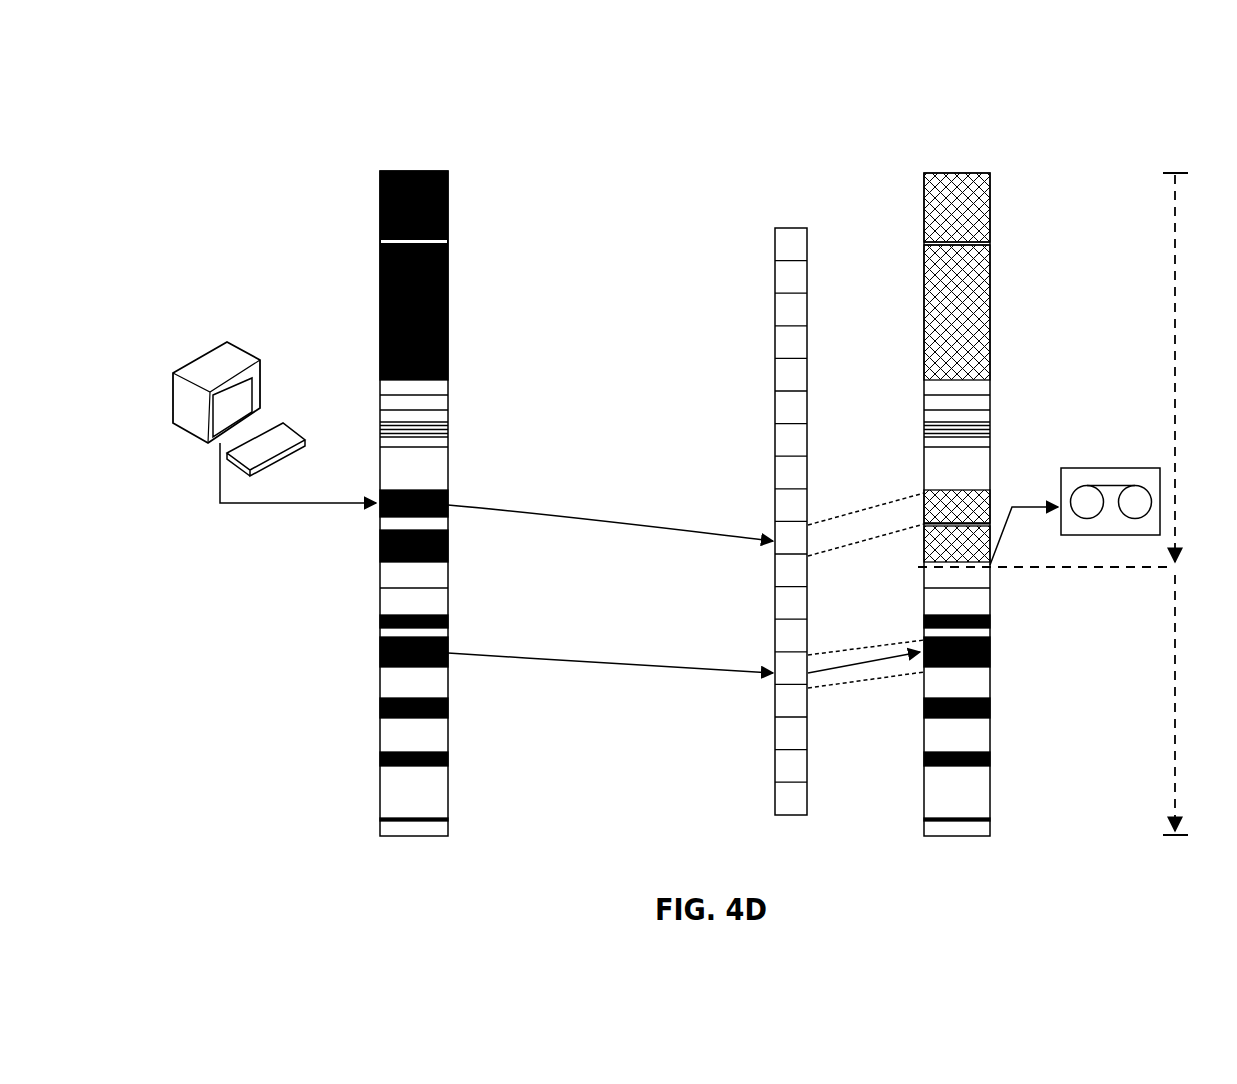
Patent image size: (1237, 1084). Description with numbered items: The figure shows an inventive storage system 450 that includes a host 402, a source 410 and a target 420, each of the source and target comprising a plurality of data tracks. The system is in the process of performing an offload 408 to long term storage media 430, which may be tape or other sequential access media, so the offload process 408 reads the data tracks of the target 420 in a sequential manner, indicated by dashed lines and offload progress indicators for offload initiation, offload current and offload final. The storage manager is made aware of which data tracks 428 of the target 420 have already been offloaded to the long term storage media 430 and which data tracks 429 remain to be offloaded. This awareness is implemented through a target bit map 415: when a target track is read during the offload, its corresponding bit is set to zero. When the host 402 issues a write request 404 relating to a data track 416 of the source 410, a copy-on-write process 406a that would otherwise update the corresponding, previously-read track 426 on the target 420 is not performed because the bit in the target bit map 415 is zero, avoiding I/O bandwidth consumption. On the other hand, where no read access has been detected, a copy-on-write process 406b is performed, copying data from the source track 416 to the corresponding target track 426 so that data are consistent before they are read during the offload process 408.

The storage system 450 is at (258, 188).
The host 402 is at (241, 337).
The write request 404 is at (281, 506).
The source 410 is at (423, 166).
The target bit map 415 is at (796, 213).
The source data track 416 is at (432, 663).
The target 420 is at (961, 166).
The target data track 426 is at (975, 515).
The offloaded data tracks 428 is at (1003, 210).
The remaining data tracks 429 is at (1003, 655).
The long term storage media 430 is at (1111, 462).
The offload process 408 is at (1027, 506).
The copy-on-write process 406a is at (594, 522).
The copy-on-write process 406b is at (619, 662).